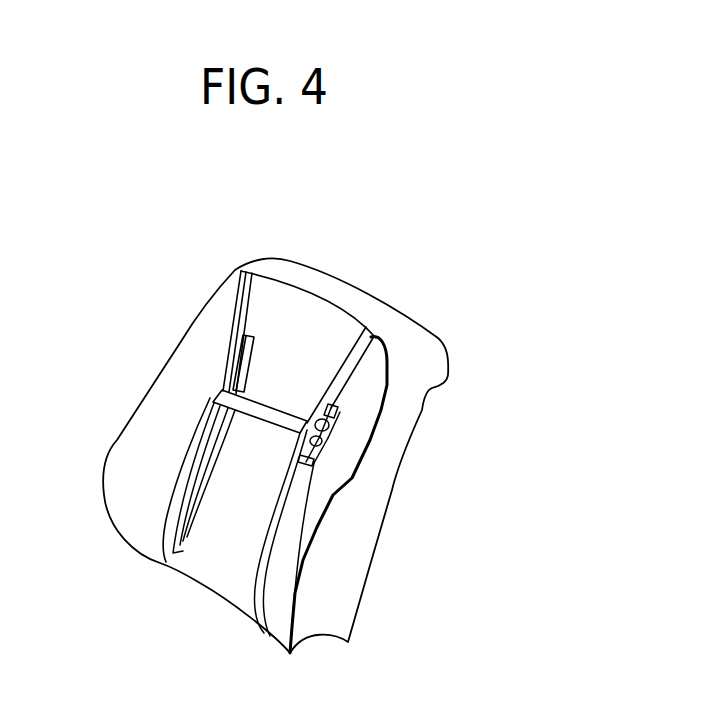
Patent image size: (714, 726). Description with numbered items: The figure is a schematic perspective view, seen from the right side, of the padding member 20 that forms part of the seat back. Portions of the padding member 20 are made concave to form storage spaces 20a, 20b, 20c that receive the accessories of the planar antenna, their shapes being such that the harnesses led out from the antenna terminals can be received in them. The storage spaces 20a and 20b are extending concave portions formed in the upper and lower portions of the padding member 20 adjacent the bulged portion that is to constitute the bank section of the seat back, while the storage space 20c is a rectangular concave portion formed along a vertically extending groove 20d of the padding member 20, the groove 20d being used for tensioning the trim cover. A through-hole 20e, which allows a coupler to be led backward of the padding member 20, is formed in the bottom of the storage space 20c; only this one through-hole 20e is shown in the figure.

The padding member 20 is at (354, 271).
The storage space 20a is at (243, 367).
The storage space 20b is at (196, 469).
The storage space 20c is at (323, 447).
The vertically extending groove 20d is at (279, 523).
The through-hole 20e is at (338, 414).